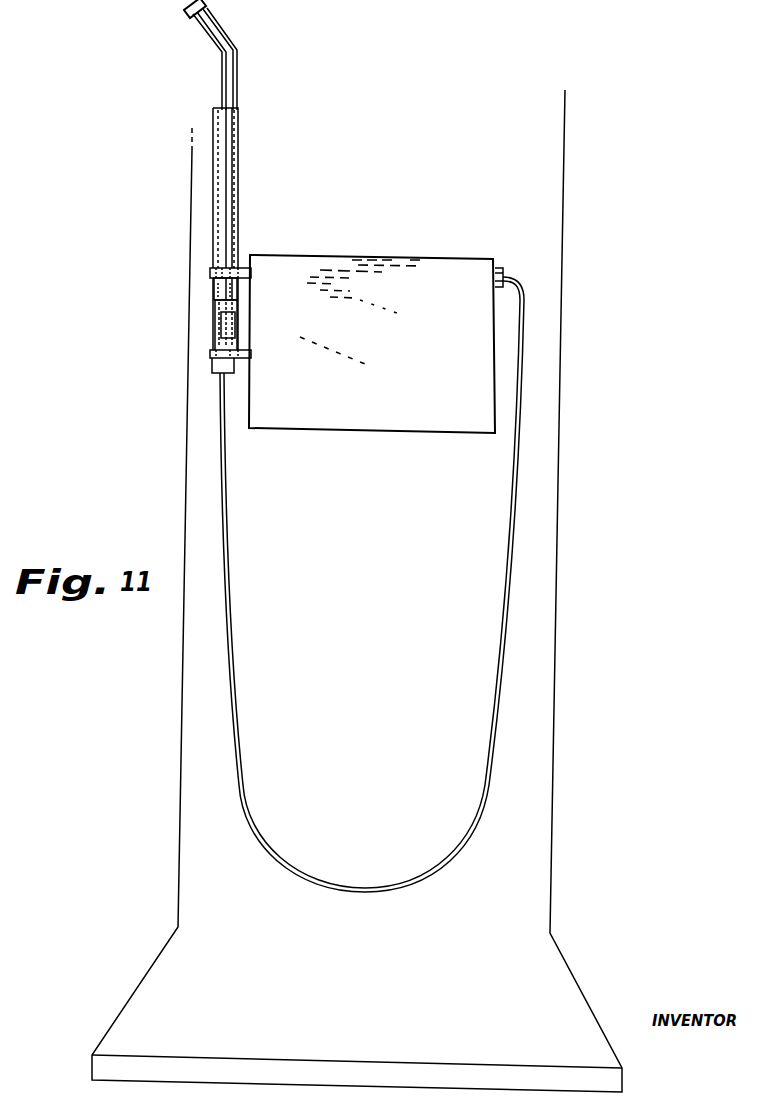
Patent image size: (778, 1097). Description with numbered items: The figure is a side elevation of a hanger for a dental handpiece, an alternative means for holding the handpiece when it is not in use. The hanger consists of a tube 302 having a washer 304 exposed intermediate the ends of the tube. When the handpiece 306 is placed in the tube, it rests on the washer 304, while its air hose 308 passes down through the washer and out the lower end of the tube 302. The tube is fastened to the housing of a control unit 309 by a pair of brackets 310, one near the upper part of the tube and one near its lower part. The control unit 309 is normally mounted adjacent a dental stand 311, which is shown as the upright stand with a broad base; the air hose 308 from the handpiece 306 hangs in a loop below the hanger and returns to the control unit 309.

The tube 302 is at (212, 283).
The washer 304 is at (214, 313).
The handpiece 306 is at (240, 135).
The air hose 308 is at (228, 525).
The control unit 309 is at (405, 374).
The brackets 310 is at (210, 268).
The dental stand 311 is at (525, 738).